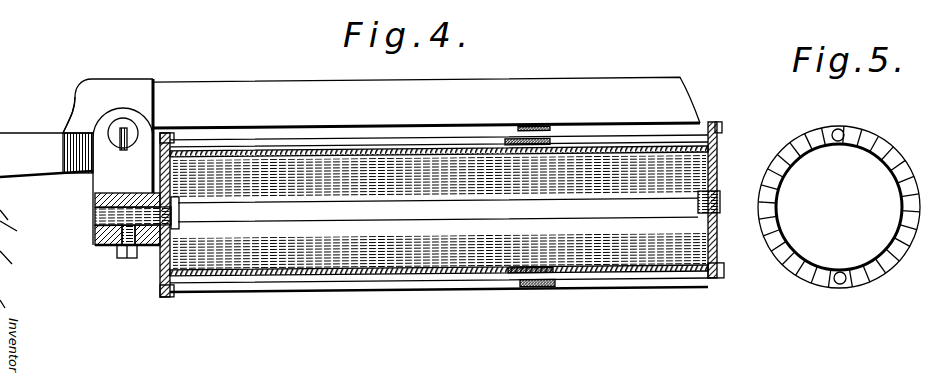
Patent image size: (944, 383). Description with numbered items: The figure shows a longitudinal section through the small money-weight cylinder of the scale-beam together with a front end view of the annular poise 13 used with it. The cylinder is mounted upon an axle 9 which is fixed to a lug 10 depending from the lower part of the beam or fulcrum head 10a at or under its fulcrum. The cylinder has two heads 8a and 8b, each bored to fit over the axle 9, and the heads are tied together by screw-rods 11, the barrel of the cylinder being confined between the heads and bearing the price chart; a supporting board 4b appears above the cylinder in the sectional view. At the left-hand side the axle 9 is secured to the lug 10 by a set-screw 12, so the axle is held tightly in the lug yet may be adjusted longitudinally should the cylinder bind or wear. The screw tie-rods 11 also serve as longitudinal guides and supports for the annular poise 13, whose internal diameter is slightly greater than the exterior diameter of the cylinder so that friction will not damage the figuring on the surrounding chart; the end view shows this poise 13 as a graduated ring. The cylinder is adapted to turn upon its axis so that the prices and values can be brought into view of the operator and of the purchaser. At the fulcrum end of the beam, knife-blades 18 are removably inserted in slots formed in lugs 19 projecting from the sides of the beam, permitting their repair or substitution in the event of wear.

In FIG. 4, the supporting board 4b is at (426, 102).
In FIG. 4, the head 8a is at (719, 156).
In FIG. 4, the head 8b is at (159, 278).
In FIG. 4, the axle 9 is at (369, 217).
In FIG. 4, the lug 10 is at (100, 183).
In FIG. 4, the fulcrum head 10a is at (60, 106).
In FIG. 4, the screw-rods 11 is at (283, 149).
In FIG. 4, the set-screw 12 is at (118, 252).
In FIG. 4, the annular poise 13 is at (544, 291).
In FIG. 5, the annular poise 13 is at (777, 210).
In FIG. 4, the knife-blades 18 is at (125, 146).
In FIG. 4, the lugs 19 is at (121, 126).